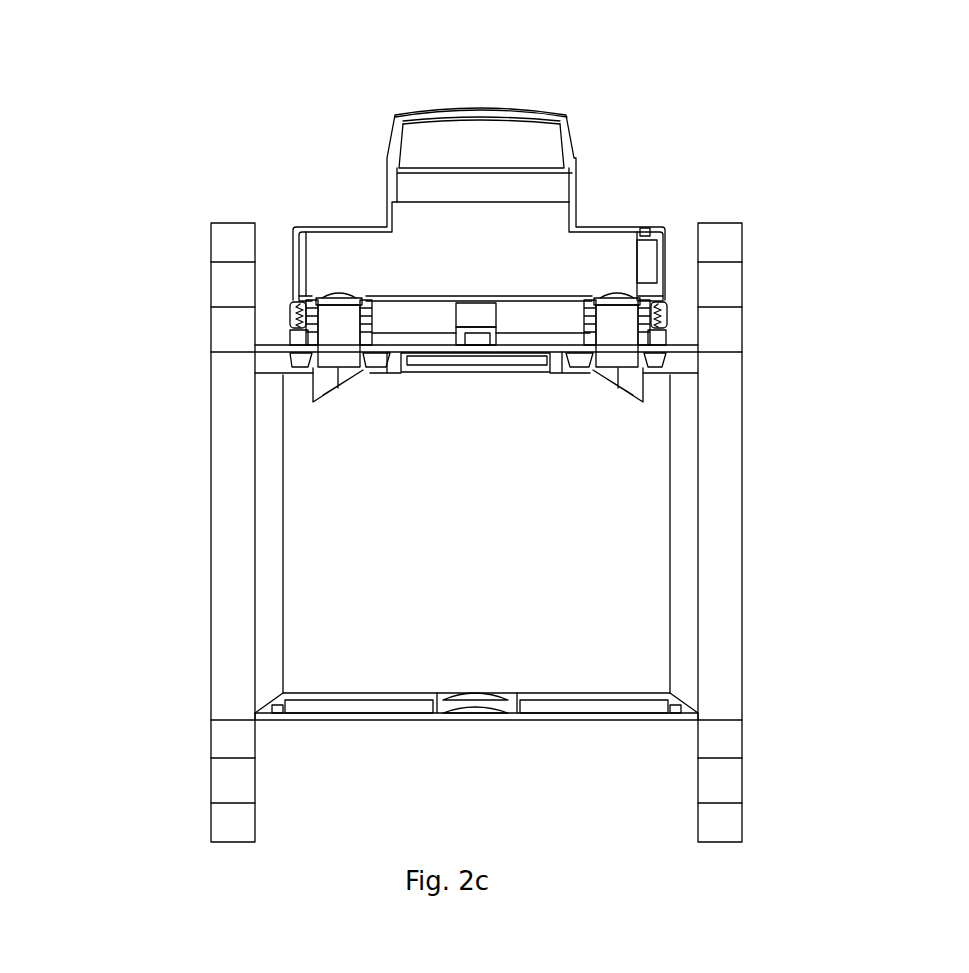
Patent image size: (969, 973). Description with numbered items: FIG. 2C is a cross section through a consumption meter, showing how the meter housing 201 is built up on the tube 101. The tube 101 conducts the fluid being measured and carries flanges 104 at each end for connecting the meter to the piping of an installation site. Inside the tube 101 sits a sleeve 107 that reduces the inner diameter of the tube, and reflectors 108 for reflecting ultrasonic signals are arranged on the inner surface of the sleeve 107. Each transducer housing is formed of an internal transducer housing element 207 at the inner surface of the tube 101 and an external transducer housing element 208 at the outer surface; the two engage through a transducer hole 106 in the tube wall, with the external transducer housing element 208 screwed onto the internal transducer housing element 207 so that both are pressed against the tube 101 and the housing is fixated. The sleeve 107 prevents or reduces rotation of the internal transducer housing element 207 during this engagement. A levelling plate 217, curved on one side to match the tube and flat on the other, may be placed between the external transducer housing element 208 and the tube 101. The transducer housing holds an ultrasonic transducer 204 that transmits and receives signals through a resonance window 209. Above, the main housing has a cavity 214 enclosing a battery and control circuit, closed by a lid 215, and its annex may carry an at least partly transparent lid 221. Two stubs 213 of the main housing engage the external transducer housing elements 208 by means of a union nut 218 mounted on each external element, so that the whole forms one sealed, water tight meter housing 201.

The tube 101 is at (385, 718).
The flanges 104 is at (725, 732).
The transducer hole 106 is at (650, 347).
The sleeve 107 is at (622, 698).
The reflectors 108 is at (475, 693).
The meter housing 201 is at (623, 207).
The ultrasonic transducer 204 is at (313, 380).
The internal transducer housing element 207 is at (303, 362).
The external transducer housing element 208 is at (289, 330).
The resonance window 209 is at (338, 388).
The stubs 213 is at (663, 302).
The cavity 214 is at (380, 258).
The lid 215 is at (660, 233).
The levelling plate 217 is at (288, 338).
The union nut 218 is at (291, 308).
The lid of the annex 221 is at (510, 115).